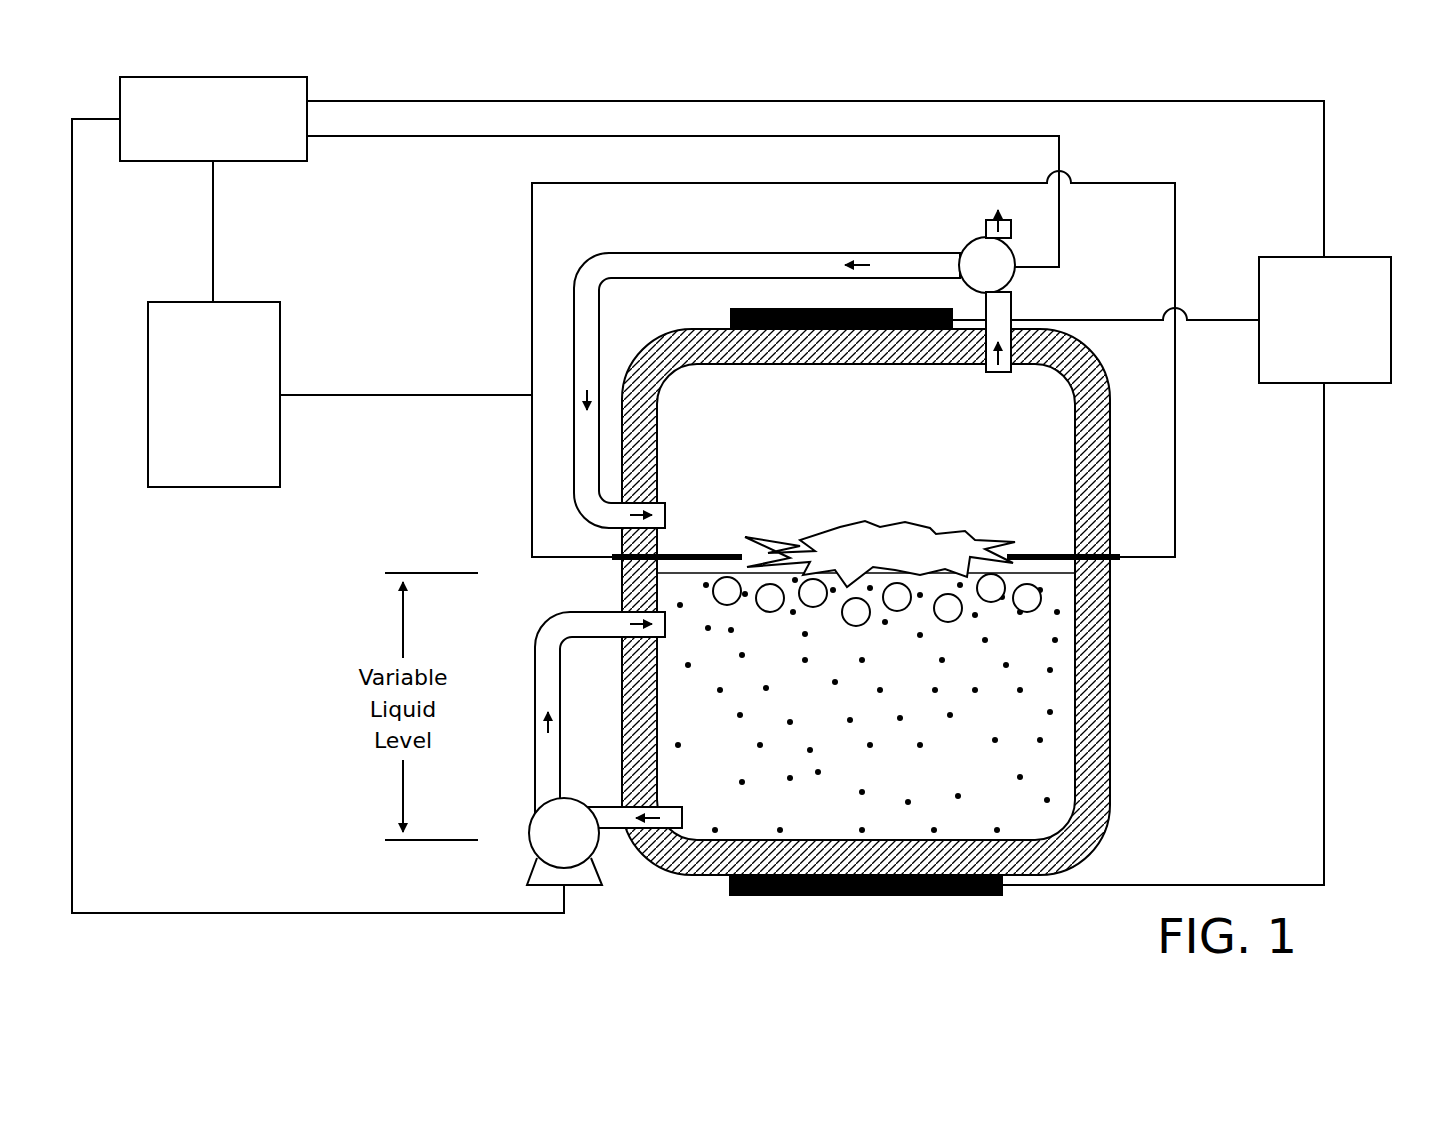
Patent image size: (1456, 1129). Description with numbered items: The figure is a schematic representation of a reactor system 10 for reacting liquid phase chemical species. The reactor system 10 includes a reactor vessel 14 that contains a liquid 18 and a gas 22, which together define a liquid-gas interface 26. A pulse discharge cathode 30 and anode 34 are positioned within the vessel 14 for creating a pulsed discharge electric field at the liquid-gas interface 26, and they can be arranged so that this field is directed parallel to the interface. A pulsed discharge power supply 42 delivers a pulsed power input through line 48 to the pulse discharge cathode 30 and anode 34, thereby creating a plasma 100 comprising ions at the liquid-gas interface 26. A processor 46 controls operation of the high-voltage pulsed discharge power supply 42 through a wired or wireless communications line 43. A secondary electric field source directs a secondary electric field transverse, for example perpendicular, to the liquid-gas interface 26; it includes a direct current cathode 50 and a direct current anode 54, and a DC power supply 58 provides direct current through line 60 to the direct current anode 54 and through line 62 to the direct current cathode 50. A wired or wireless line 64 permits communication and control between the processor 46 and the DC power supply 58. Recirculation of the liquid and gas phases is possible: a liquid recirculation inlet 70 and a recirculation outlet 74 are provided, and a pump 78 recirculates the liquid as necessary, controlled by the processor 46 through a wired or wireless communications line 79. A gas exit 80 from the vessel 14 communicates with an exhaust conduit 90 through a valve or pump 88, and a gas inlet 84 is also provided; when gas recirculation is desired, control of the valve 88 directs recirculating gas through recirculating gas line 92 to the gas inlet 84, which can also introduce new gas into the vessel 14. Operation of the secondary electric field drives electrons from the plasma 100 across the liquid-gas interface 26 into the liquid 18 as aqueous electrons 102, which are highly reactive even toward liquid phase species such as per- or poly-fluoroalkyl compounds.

The reactor system 10 is at (1378, 640).
The reactor vessel 14 is at (1110, 687).
The liquid 18 is at (1027, 800).
The gas 22 is at (1040, 443).
The liquid-gas interface 26 is at (1060, 573).
The pulse discharge cathode 30 is at (696, 557).
The anode 34 is at (1030, 557).
The pulsed discharge power supply 42 is at (170, 487).
The communications line 43 is at (213, 226).
The processor 46 is at (255, 77).
The line 48 is at (390, 395).
The direct current cathode 50 is at (815, 895).
The direct current anode 54 is at (731, 320).
The DC power supply 58 is at (1363, 257).
The line 60 is at (1222, 320).
The line 62 is at (1325, 770).
The line 64 is at (630, 101).
The liquid recirculation inlet 70 is at (682, 820).
The recirculation outlet 74 is at (665, 637).
The pump 78 is at (600, 850).
The communications line 79 is at (72, 748).
The gas exit 80 is at (998, 372).
The gas inlet 84 is at (665, 507).
The valve or pump 88 is at (960, 258).
The exhaust conduit 90 is at (986, 228).
The recirculating gas line 92 is at (665, 253).
The plasma 100 is at (860, 520).
The aqueous electrons 102 is at (992, 602).